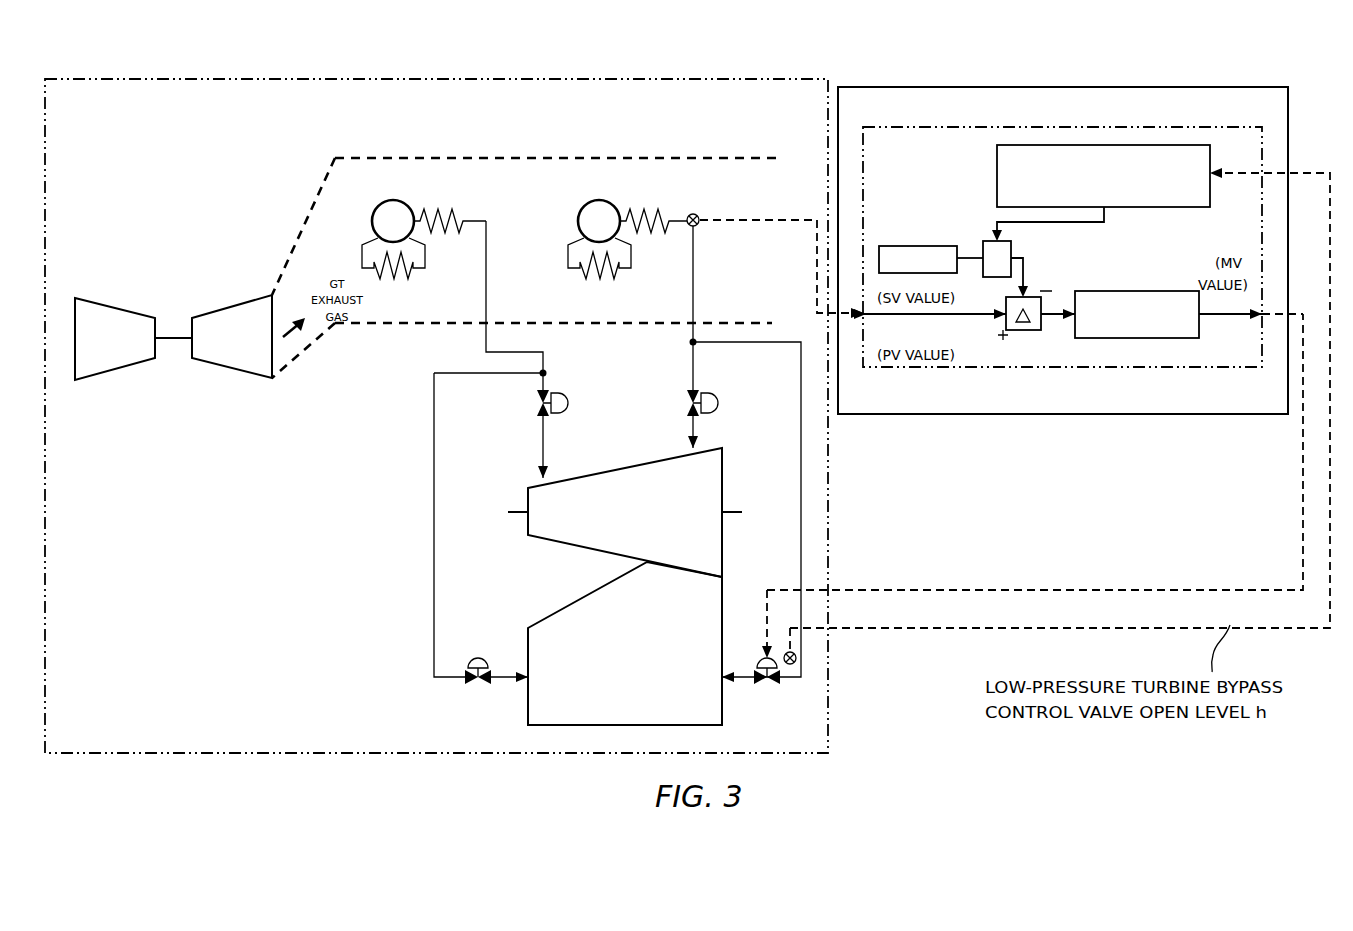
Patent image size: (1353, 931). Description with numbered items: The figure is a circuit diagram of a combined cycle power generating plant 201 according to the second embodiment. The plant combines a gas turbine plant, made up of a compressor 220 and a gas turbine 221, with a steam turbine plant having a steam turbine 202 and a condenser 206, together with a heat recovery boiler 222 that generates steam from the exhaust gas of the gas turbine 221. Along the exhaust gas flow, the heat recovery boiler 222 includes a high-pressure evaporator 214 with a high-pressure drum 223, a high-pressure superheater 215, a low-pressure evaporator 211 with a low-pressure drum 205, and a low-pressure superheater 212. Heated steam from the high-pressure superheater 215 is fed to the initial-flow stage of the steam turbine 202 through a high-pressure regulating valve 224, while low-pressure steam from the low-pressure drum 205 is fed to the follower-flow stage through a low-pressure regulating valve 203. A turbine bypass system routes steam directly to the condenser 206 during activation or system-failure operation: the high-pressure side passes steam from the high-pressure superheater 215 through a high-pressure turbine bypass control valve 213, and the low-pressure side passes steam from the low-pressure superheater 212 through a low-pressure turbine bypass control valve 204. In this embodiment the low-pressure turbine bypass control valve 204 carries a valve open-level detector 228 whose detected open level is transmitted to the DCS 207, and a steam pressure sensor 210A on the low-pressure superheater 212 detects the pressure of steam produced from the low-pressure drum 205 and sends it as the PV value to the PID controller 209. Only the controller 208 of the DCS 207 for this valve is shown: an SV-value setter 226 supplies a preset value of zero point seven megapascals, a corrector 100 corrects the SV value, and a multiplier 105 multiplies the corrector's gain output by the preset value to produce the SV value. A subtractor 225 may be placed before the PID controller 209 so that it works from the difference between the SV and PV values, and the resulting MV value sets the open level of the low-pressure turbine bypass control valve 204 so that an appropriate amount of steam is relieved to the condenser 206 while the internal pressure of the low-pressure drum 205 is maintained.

The corrector 100 is at (1018, 145).
The multiplier 105 is at (1013, 250).
The combined cycle power generating plant 201 is at (617, 79).
The steam turbine 202 is at (713, 478).
The low-pressure regulating valve 203 is at (715, 399).
The low-pressure turbine bypass control valve 204 is at (767, 690).
The low-pressure drum 205 is at (612, 207).
The condenser 206 is at (590, 596).
The DCS 207 is at (1097, 87).
The controller 208 is at (1183, 127).
The PID controller 209 is at (1112, 291).
The steam pressure sensor 210A is at (700, 217).
The low-pressure evaporator 211 is at (606, 284).
The low-pressure superheater 212 is at (668, 213).
The high-pressure turbine bypass control valve 213 is at (478, 657).
The high-pressure evaporator 214 is at (400, 284).
The high-pressure superheater 215 is at (458, 213).
The compressor 220 is at (104, 300).
The gas turbine 221 is at (218, 318).
The heat recovery boiler 222 is at (445, 116).
The high-pressure drum 223 is at (414, 213).
The high-pressure regulating valve 224 is at (565, 399).
The subtractor 225 is at (1018, 330).
The SV-value setter 226 is at (915, 246).
The valve open-level detector 228 is at (797, 657).